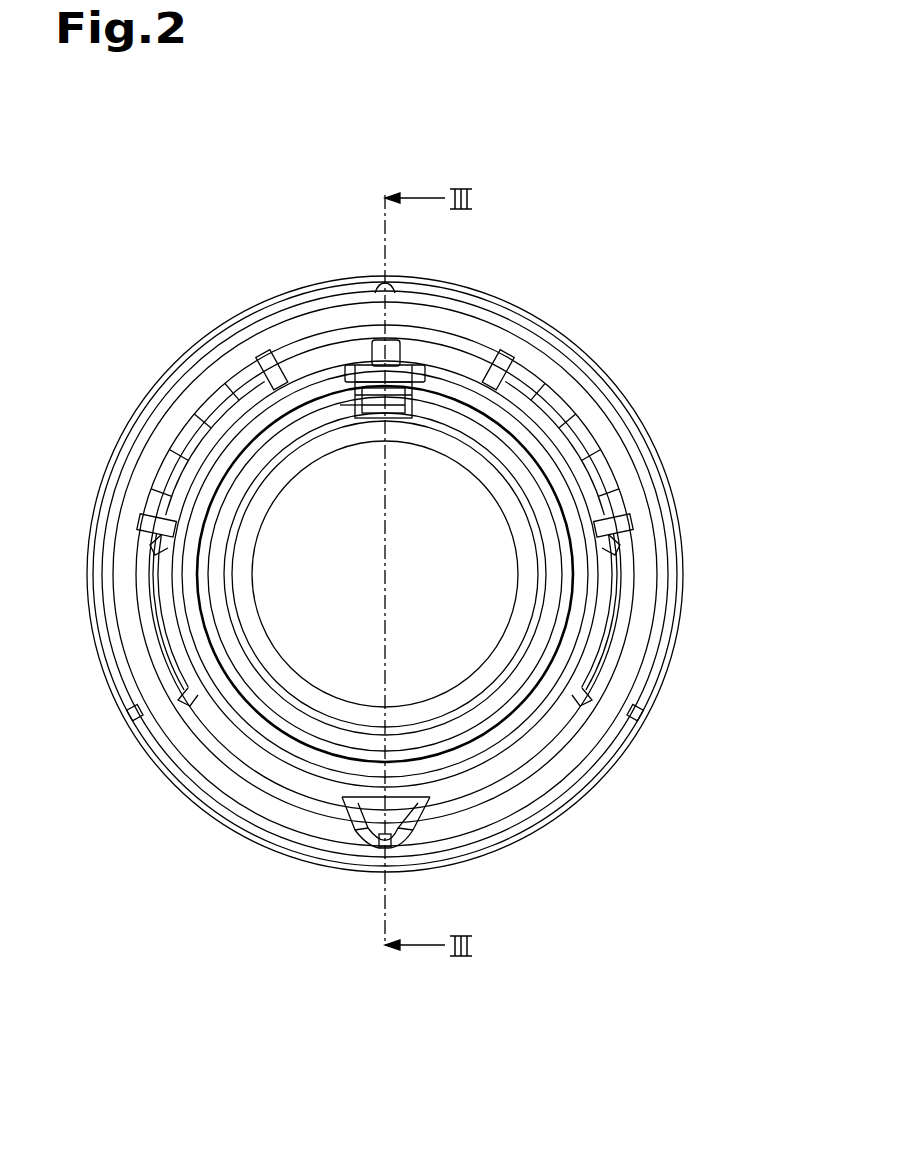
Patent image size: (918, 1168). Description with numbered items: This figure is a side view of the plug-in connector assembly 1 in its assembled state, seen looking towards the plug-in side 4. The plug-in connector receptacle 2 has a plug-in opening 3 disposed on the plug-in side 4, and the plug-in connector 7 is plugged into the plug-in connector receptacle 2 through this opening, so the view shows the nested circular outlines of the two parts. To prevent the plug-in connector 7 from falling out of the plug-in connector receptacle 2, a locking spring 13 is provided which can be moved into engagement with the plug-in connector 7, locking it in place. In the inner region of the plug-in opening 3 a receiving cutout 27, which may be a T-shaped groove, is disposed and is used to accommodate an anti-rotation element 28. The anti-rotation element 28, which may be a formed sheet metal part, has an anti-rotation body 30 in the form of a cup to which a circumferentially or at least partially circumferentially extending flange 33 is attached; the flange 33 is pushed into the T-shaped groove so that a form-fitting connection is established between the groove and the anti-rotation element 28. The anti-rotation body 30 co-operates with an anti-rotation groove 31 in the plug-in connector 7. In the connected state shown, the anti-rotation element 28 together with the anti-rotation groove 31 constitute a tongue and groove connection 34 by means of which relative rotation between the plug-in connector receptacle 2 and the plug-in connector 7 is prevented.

The plug-in connector assembly 1 is at (672, 110).
The plug-in connector receptacle 2 is at (565, 387).
The plug-in opening 3 is at (545, 447).
The plug-in side 4 is at (612, 586).
The plug-in connector 7 is at (527, 556).
The locking spring 13 is at (600, 685).
The receiving cutout 27 is at (425, 400).
The anti-rotation element 28 is at (368, 365).
The anti-rotation body 30 is at (356, 393).
The anti-rotation groove 31 is at (345, 405).
The flange 33 is at (428, 372).
The tongue and groove connection 34 is at (488, 388).